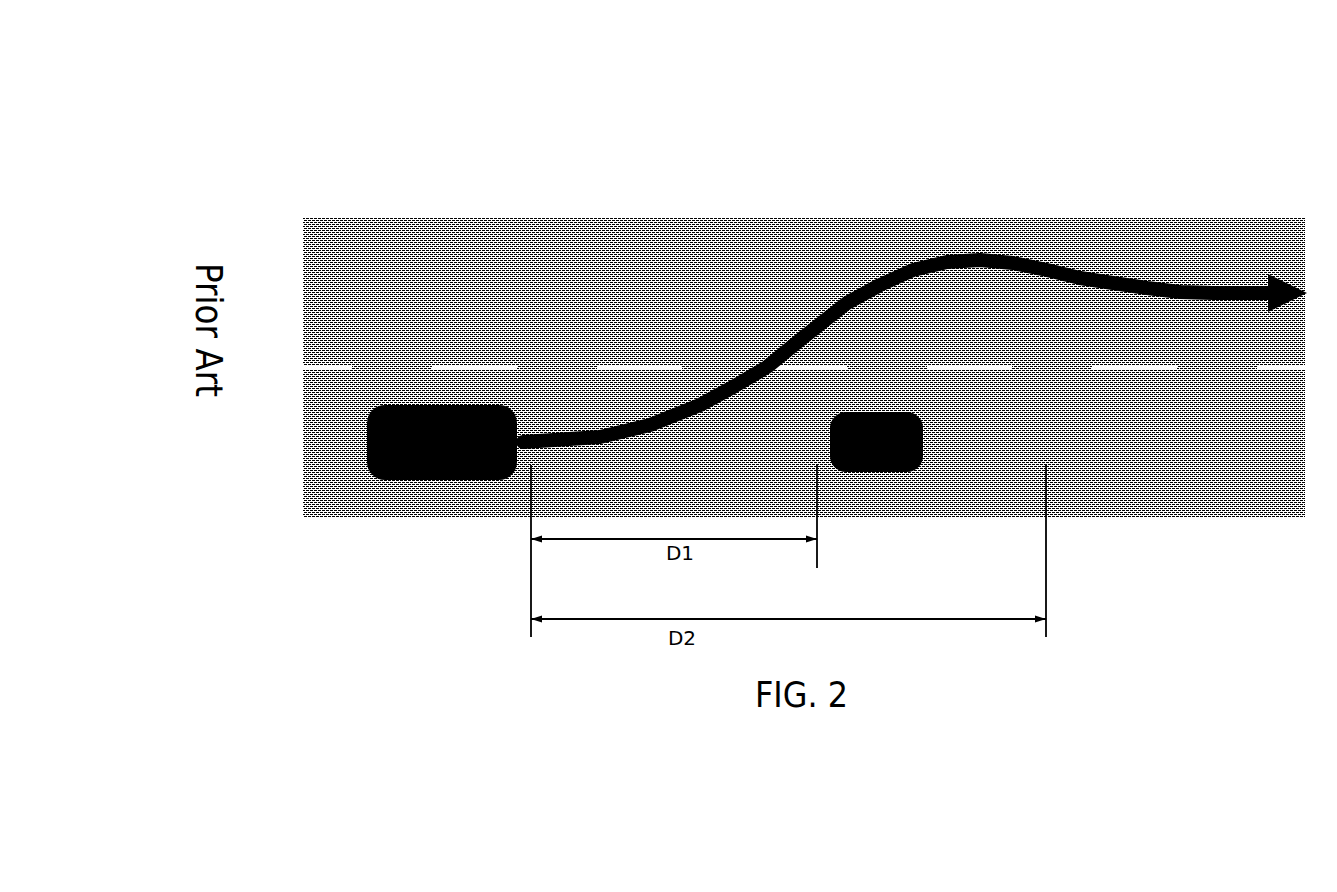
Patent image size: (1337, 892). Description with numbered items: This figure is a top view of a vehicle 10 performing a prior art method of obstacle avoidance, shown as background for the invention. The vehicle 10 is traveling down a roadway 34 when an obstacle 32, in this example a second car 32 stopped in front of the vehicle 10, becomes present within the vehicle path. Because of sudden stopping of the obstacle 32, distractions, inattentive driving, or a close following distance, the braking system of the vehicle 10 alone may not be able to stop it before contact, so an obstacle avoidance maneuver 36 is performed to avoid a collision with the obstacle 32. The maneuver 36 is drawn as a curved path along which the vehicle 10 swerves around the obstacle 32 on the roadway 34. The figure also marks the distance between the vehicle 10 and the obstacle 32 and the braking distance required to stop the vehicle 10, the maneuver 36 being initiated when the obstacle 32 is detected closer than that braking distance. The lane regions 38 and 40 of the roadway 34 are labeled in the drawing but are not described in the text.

The vehicle 10 is at (428, 473).
The obstacle 32 is at (937, 483).
The roadway 34 is at (804, 348).
The obstacle avoidance maneuver 36 is at (948, 258).
The travel lane 38 is at (1207, 467).
The adjacent lane 40 is at (615, 263).